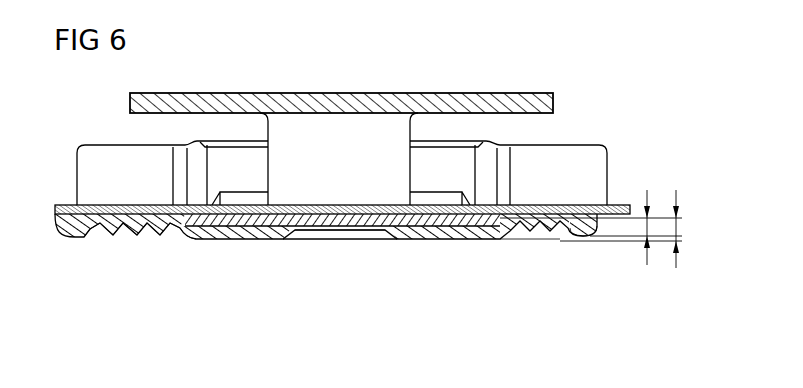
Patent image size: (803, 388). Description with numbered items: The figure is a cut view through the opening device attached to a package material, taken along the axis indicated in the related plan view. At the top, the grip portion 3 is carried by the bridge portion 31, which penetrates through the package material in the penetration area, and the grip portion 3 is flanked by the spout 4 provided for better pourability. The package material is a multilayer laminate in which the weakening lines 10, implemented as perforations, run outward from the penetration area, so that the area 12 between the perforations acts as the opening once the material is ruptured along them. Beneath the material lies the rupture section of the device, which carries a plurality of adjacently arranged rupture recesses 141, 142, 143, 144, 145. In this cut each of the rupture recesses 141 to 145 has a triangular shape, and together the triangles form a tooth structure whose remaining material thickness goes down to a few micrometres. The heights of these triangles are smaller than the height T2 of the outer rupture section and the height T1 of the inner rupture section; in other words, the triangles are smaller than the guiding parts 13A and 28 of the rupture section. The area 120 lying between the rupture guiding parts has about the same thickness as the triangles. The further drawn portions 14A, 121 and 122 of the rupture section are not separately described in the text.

The grip portion 3 is at (343, 92).
The spout 4 is at (103, 155).
The weakening lines 10 is at (112, 205).
The area between the perforations 12 is at (312, 210).
The bridge portion 31 is at (378, 170).
The guiding part of the rupture section 13A is at (232, 242).
The lower layer section 14A is at (535, 240).
The guiding part of the rupture section 28 is at (580, 236).
The area in between the rupture guiding section 120 is at (313, 238).
The intermediate layer 121 is at (255, 241).
The thin layer 122 is at (347, 242).
The rupture recess 141 is at (101, 240).
The rupture recess 142 is at (128, 242).
The rupture recess 143 is at (146, 240).
The rupture recess 144 is at (168, 242).
The rupture recess 145 is at (196, 240).
The height of the inner rupture section T1 is at (650, 225).
The height of the outer rupture section T2 is at (673, 230).